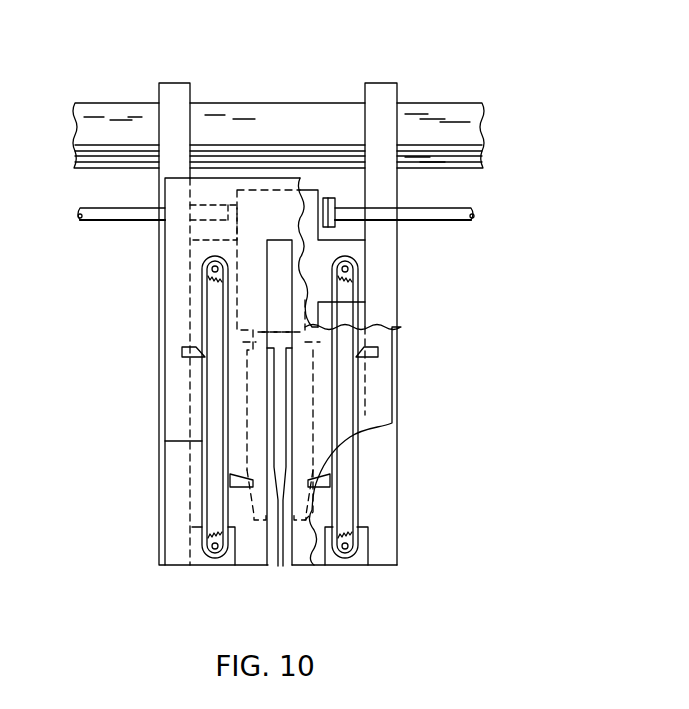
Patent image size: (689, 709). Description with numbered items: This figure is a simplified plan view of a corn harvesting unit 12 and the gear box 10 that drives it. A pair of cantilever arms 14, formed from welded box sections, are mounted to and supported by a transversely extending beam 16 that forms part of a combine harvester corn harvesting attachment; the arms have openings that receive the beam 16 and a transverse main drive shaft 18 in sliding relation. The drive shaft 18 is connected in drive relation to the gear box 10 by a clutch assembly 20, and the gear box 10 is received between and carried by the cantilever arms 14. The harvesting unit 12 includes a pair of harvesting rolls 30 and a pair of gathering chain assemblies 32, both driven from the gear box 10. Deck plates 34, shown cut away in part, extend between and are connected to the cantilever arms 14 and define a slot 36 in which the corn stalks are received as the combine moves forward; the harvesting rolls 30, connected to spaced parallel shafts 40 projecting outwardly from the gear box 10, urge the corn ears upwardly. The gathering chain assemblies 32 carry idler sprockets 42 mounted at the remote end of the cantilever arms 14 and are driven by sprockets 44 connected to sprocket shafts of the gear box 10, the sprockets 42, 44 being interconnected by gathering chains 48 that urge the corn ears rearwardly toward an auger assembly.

The gear box 10 is at (373, 253).
The corn harvesting unit 12 is at (415, 447).
The cantilever arms 14 is at (163, 505).
The transversely extending beam 16 is at (107, 103).
The main drive shaft 18 is at (474, 207).
The clutch assembly 20 is at (330, 198).
The harvesting rolls 30 is at (247, 364).
The gathering chain assemblies 32 is at (203, 317).
The deck plates 34 is at (221, 178).
The slot 36 is at (282, 567).
The shafts 40 is at (187, 343).
The idler sprockets 42 is at (205, 556).
The sprockets 44 is at (208, 280).
The gathering chains 48 is at (165, 441).